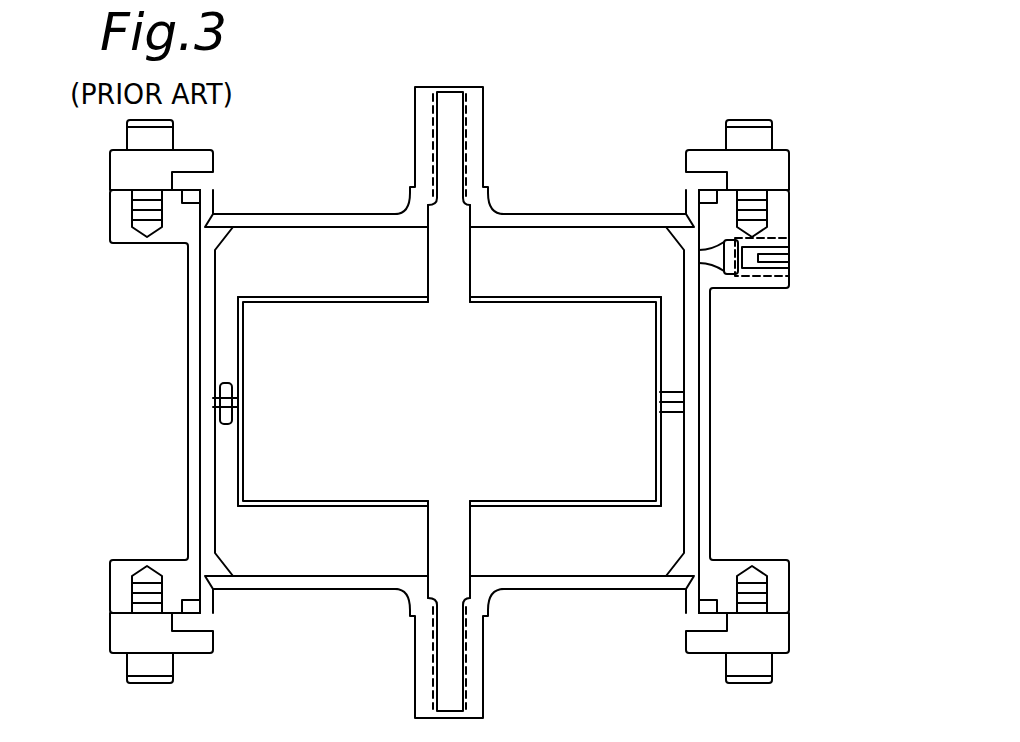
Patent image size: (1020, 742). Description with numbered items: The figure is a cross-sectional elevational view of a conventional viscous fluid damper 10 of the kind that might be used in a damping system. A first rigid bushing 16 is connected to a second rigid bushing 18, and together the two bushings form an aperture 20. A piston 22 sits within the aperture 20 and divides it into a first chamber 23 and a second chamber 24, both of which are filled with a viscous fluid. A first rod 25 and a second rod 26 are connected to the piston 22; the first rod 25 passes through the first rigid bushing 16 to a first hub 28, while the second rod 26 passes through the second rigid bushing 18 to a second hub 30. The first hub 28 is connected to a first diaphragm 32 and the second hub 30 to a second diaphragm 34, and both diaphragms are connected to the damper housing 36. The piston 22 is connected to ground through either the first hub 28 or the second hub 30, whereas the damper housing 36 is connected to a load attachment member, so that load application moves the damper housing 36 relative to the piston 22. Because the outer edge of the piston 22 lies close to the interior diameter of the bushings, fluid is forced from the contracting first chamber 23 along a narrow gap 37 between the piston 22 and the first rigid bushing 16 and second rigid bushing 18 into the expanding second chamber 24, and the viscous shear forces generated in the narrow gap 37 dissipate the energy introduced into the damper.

The viscous fluid damper 10 is at (766, 350).
The first rigid bushing 16 is at (449, 314).
The second rigid bushing 18 is at (449, 488).
The aperture 20 is at (662, 435).
The piston 22 is at (449, 401).
The first chamber 23 is at (386, 298).
The second chamber 24 is at (363, 506).
The first rod 25 is at (449, 253).
The second rod 26 is at (449, 549).
The first hub 28 is at (486, 130).
The second hub 30 is at (487, 643).
The first diaphragm 32 is at (328, 212).
The second diaphragm 34 is at (325, 591).
The damper housing 36 is at (712, 522).
The narrow gap 37 is at (233, 472).